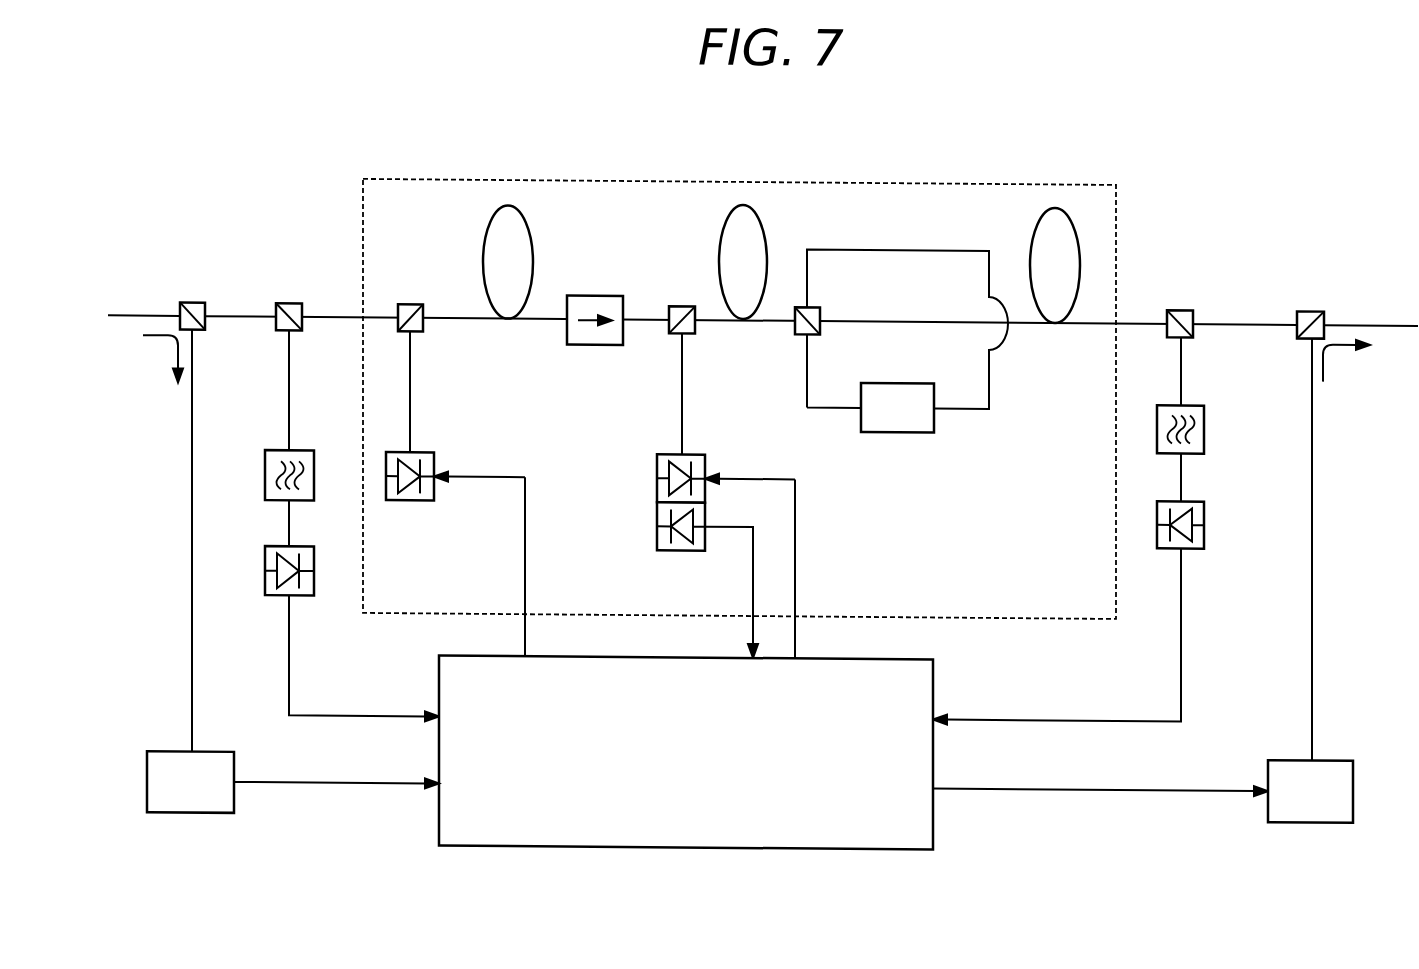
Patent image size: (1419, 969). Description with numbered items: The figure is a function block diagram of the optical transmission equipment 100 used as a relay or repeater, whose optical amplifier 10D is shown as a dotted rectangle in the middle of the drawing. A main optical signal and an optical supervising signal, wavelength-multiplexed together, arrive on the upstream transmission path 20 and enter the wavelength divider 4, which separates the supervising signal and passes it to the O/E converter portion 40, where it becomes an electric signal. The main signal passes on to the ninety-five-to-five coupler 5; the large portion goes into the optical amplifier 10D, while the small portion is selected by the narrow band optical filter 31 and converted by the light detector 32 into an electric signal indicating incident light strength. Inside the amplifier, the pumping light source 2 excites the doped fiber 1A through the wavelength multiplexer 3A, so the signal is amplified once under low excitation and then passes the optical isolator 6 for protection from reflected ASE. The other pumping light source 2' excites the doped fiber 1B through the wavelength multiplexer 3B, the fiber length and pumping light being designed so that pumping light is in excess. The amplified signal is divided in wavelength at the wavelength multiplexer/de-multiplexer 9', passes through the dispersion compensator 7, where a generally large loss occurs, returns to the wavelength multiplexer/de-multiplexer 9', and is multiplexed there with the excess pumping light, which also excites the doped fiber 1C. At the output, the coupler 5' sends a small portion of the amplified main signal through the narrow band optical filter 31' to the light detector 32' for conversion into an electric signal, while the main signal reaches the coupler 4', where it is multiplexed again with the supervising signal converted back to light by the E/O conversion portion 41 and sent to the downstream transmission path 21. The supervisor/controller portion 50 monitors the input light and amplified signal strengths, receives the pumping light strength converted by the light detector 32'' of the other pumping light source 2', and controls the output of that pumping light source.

The optical transmission equipment 100 is at (1320, 187).
The optical amplifier 10D is at (1172, 198).
The transmission path 20 is at (138, 312).
The transmission path 21 is at (1372, 314).
The wavelength divider 4 is at (192, 499).
The 95:5 coupler 4' is at (1311, 507).
The 95:5 coupler 5 is at (357, 484).
The 95:5 coupler 5' is at (1064, 489).
The wavelength multiplexer 3A is at (410, 300).
The wavelength multiplexer 3B is at (682, 300).
The doped fiber 1A is at (528, 216).
The doped fiber 1B is at (762, 216).
The doped fiber 1C is at (1035, 215).
The optical isolator 6 is at (595, 290).
The wavelength multiplexer/de-multiplexer 9' is at (901, 329).
The dispersion compensator 7 is at (897, 375).
The pumping light source 2 is at (455, 539).
The other pumping light source 2' is at (726, 540).
The narrow band optical filter 31 is at (259, 474).
The light detector 32 is at (259, 569).
The light detector 32'' is at (707, 580).
The narrow band optical filter 31' is at (1215, 427).
The light detector 32' is at (1215, 523).
The supervisor/controller portion 50 is at (933, 672).
The O/E converter portion 40 is at (205, 750).
The E/O conversion portion 41 is at (1330, 749).